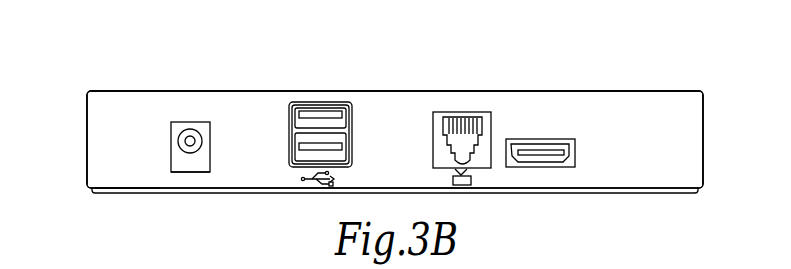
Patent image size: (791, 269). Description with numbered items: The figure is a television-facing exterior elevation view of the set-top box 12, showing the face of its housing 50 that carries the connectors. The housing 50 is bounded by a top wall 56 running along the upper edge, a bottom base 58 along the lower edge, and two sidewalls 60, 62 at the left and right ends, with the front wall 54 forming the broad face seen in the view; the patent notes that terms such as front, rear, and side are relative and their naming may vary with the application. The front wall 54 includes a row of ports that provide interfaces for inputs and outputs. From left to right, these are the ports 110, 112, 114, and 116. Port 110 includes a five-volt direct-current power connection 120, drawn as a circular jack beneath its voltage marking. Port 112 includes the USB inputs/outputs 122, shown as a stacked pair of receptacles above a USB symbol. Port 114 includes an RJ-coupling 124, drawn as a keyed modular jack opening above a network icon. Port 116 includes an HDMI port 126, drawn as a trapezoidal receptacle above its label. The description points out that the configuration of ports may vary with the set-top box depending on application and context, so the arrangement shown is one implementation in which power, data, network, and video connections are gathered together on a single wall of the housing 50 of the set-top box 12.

The set-top box 12 is at (111, 78).
The housing 50 is at (678, 82).
The front wall 54 is at (122, 178).
The top wall 56 is at (157, 90).
The bottom base 58 is at (247, 194).
The sidewall 60 is at (87, 143).
The sidewall 62 is at (703, 139).
The port 110 is at (203, 122).
The port 112 is at (322, 101).
The port 114 is at (467, 111).
The port 116 is at (538, 138).
The 5V dc power connection 120 is at (188, 168).
The USB inputs/outputs 122 is at (302, 168).
The RJ-coupling 124 is at (480, 160).
The HDMI port 126 is at (568, 168).